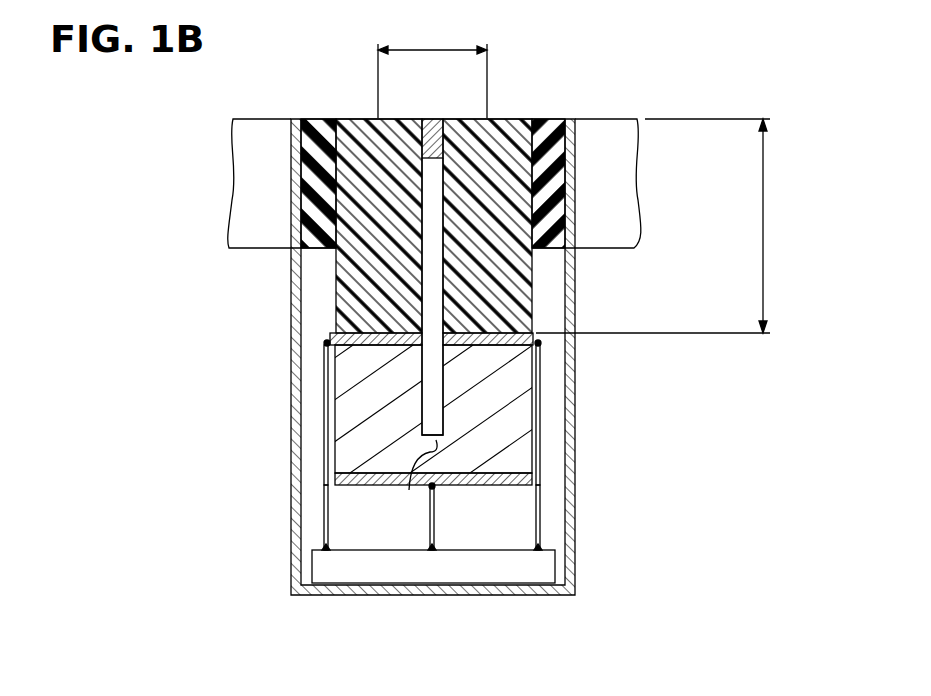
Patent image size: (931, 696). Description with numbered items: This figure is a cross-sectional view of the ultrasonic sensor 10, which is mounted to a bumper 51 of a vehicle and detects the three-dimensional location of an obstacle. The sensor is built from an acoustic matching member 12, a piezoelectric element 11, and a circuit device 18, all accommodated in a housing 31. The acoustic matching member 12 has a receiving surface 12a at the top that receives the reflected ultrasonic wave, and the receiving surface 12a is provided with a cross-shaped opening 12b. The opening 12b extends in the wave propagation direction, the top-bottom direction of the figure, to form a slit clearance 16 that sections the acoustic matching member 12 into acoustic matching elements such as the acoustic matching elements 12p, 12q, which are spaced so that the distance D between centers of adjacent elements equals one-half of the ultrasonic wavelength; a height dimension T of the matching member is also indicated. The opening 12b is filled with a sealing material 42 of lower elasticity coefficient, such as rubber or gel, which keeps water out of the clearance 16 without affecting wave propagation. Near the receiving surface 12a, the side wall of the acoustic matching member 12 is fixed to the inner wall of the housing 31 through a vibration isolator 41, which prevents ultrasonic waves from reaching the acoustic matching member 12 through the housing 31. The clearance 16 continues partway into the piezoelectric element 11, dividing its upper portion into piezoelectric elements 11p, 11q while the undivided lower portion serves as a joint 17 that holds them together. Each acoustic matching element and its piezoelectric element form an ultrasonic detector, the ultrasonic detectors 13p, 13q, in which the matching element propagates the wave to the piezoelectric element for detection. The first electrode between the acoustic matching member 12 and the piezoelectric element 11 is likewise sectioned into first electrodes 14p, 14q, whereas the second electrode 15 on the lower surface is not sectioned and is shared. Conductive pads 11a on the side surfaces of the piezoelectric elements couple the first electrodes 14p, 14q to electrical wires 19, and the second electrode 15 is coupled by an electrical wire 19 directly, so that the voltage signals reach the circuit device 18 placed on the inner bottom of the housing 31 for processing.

The ultrasonic sensor 10 is at (658, 71).
The bumper 51 is at (256, 121).
The vibration isolator 41 is at (316, 120).
The sealing material 42 is at (420, 120).
The acoustic matching member 12 is at (542, 277).
The receiving surface 12a is at (356, 120).
The opening 12b is at (437, 120).
The acoustic matching element 12p is at (340, 298).
The acoustic matching element 12q is at (542, 302).
The clearance 16 is at (440, 268).
The piezoelectric element 11 is at (542, 454).
The conductive pad 11a is at (324, 343).
The piezoelectric element 11p is at (385, 347).
The piezoelectric element 11q is at (512, 433).
The ultrasonic detector 13p is at (188, 302).
The ultrasonic detector 13q is at (790, 374).
The first electrode 14p is at (334, 393).
The first electrode 14q is at (545, 385).
The second electrode 15 is at (335, 479).
The joint 17 is at (409, 490).
The circuit device 18 is at (328, 567).
The electrical wire 19 is at (326, 517).
The housing 31 is at (575, 568).
The distance D is at (432, 71).
The thickness dimension T is at (661, 226).